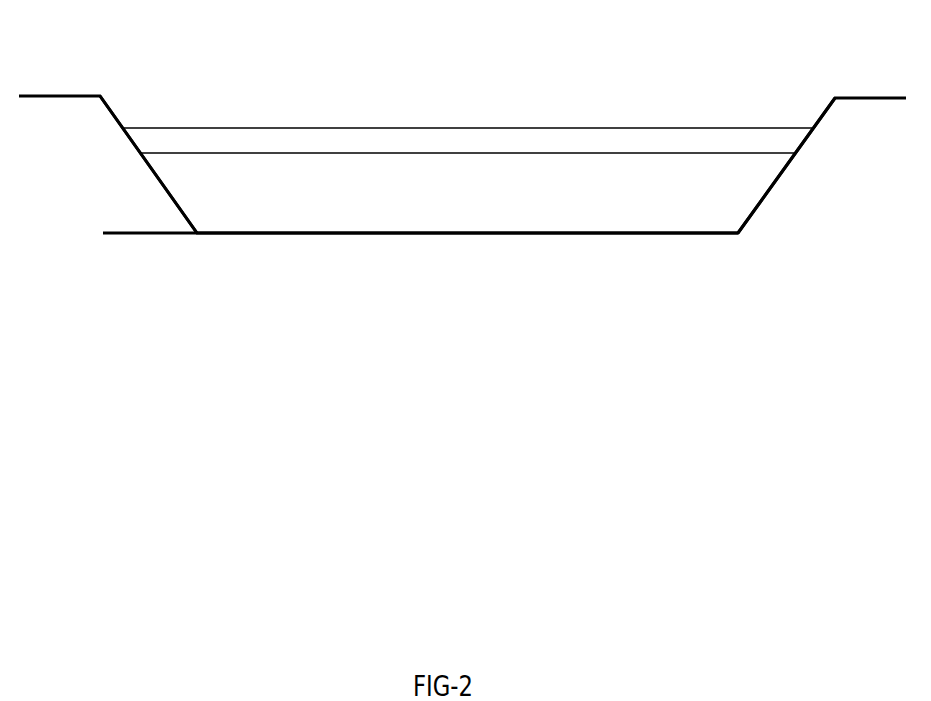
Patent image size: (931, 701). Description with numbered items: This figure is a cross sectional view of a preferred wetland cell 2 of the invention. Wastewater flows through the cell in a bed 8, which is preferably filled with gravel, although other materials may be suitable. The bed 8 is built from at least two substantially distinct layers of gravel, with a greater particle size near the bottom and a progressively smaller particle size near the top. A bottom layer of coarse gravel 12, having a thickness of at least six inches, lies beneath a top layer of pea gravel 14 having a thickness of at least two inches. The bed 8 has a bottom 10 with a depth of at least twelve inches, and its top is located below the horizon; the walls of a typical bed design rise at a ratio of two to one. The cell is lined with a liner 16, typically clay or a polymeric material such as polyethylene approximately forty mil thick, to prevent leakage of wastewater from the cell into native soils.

The wetland cell 2 is at (100, 185).
The bed 8 is at (413, 152).
The bottom 10 is at (631, 232).
The bottom layer of coarse gravel 12 is at (484, 196).
The top layer of pea gravel 14 is at (287, 128).
The liner 16 is at (348, 233).